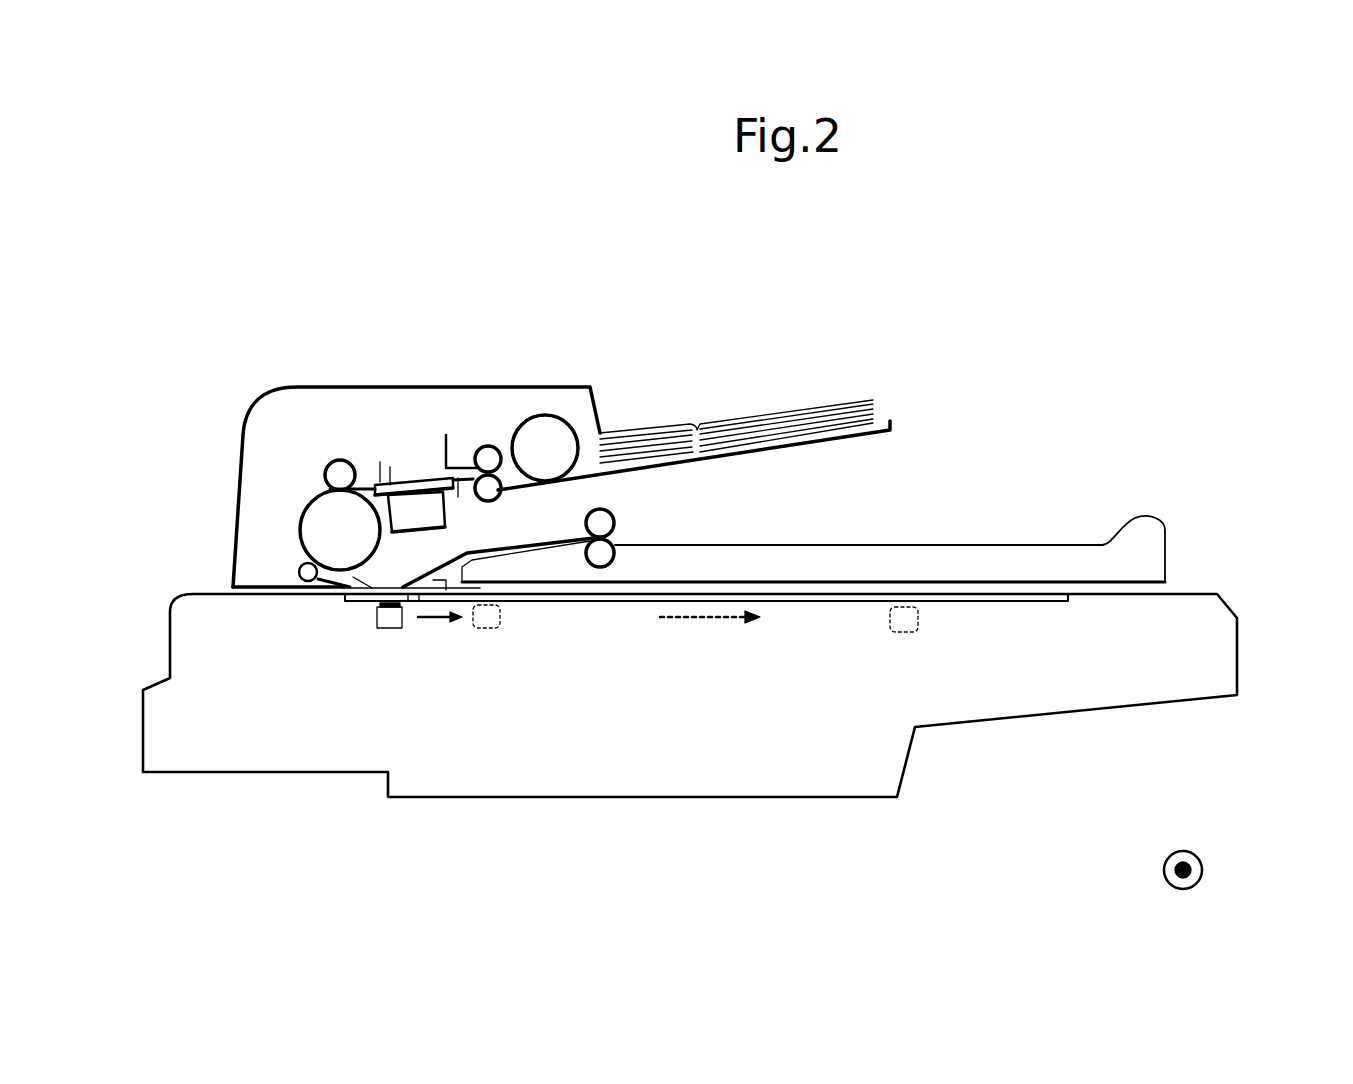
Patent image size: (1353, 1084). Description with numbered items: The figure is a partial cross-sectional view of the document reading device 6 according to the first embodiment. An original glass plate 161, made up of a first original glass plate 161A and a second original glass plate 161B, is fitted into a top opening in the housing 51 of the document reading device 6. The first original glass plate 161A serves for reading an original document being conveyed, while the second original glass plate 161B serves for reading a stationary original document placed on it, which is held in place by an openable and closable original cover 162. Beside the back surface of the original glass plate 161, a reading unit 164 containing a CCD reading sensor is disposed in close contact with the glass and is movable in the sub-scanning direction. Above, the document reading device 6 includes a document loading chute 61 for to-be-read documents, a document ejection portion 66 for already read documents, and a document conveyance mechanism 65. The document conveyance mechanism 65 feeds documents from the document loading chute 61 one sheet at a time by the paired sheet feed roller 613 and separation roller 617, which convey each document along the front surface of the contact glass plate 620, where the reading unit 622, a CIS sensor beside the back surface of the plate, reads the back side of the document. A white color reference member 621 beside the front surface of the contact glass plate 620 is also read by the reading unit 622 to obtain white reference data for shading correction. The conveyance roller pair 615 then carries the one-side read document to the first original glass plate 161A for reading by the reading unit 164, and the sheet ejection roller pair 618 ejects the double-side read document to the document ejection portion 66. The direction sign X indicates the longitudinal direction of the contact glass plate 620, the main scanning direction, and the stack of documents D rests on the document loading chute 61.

The document reading device 6 is at (632, 498).
The housing 51 is at (1238, 655).
The document loading chute 61 is at (890, 422).
The document conveyance mechanism 65 is at (266, 489).
The document ejection portion 66 is at (982, 544).
The original glass plate 161 is at (604, 618).
The first original glass plate 161A is at (358, 596).
The second original glass plate 161B is at (869, 598).
The original cover 162 is at (770, 583).
The reading unit 164 is at (375, 618).
The sheet feed roller 613 is at (493, 445).
The conveyance roller pair 615 is at (302, 502).
The separation roller 617 is at (540, 470).
The sheet ejection roller pair 618 is at (605, 523).
The contact glass plate 620 is at (437, 466).
The white color reference member 621 is at (418, 473).
The reading unit 622 is at (427, 533).
The document stack D is at (740, 420).
The direction X is at (1204, 860).